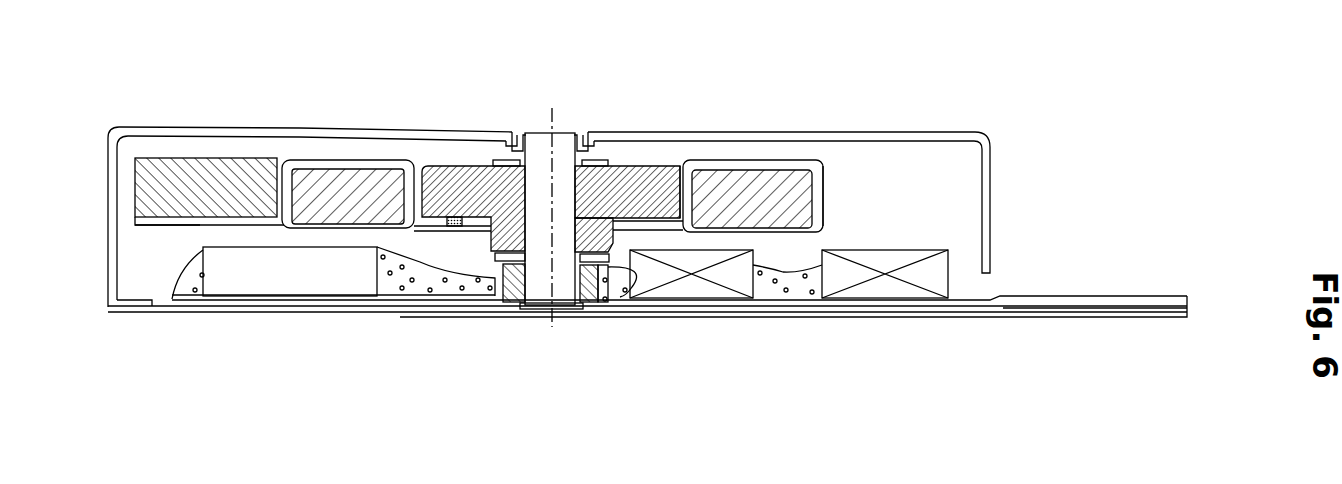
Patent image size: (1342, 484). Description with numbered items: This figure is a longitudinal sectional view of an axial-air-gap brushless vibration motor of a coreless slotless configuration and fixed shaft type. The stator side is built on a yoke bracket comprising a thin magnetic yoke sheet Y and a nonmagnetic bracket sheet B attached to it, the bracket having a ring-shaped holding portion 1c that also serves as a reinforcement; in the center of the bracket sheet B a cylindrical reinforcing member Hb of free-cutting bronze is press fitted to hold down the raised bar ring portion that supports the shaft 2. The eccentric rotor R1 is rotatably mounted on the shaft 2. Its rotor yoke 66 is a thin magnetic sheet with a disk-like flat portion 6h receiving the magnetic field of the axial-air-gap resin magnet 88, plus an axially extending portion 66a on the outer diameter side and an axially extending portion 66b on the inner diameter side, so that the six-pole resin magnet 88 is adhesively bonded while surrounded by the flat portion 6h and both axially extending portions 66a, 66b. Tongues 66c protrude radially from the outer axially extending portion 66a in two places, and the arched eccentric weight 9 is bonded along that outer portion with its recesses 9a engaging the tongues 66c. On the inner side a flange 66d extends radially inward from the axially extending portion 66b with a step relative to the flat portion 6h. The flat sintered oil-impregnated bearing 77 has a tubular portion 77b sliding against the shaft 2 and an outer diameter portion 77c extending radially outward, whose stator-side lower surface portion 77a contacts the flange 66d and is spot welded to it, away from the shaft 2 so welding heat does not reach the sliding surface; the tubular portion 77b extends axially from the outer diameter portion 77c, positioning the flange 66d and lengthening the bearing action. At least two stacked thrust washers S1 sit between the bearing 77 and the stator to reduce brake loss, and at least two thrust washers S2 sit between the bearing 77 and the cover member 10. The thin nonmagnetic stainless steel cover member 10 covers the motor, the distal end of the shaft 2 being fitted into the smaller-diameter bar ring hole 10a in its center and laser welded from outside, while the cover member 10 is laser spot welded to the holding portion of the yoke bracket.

The eccentric weight 9 is at (165, 155).
The recesses 9a is at (163, 222).
The rotor yoke 66 is at (395, 155).
The axially extending portion on the outer diameter side 66a is at (270, 160).
The axially extending portion on the inner diameter side 66b is at (425, 158).
The tongues 66c is at (235, 300).
The flange 66d is at (428, 228).
The flat portion 6h is at (340, 165).
The cover member 10 is at (917, 131).
The bar ring hole 10a is at (580, 137).
The shaft 2 is at (546, 301).
The ring-shaped holding portion 1c is at (528, 310).
The thrust washers S1 is at (605, 264).
The thrust washers S2 is at (596, 158).
The cylindrical reinforcing member Hb is at (490, 292).
The bearing 77 is at (663, 165).
The lower surface portion 77a is at (633, 219).
The tubular portion 77b is at (596, 222).
The outer diameter portion 77c is at (650, 203).
The axial-air-gap resin magnet 88 is at (745, 192).
The eccentric rotor R1 is at (830, 203).
The bracket sheet B is at (800, 318).
The yoke sheet Y is at (863, 315).